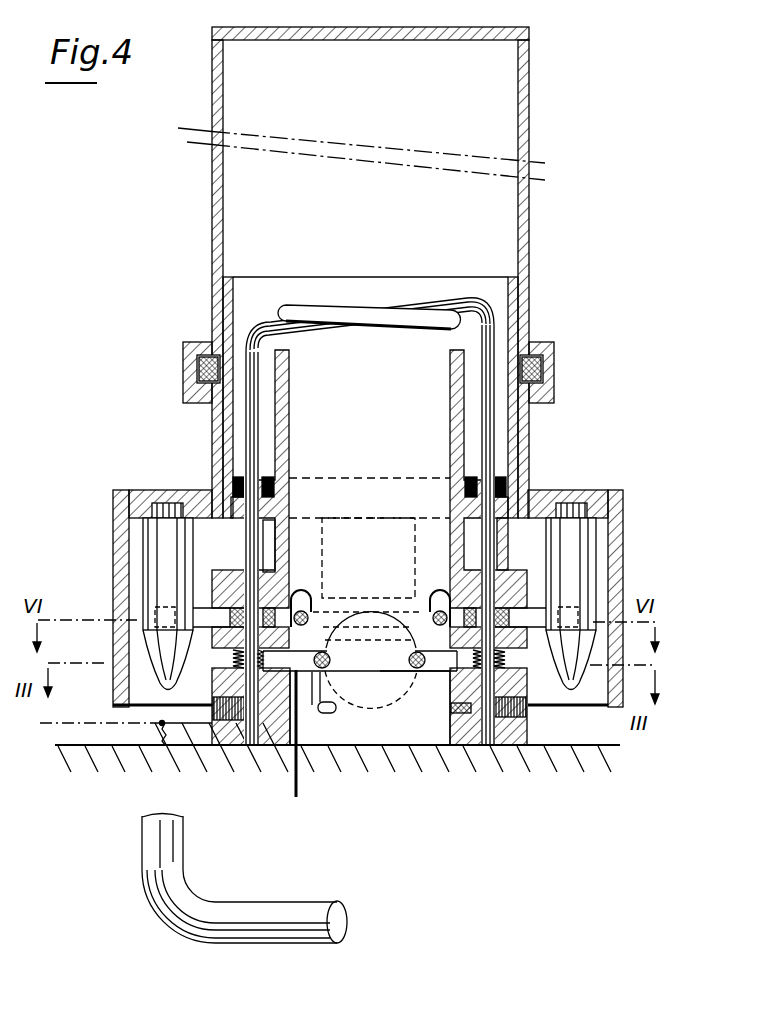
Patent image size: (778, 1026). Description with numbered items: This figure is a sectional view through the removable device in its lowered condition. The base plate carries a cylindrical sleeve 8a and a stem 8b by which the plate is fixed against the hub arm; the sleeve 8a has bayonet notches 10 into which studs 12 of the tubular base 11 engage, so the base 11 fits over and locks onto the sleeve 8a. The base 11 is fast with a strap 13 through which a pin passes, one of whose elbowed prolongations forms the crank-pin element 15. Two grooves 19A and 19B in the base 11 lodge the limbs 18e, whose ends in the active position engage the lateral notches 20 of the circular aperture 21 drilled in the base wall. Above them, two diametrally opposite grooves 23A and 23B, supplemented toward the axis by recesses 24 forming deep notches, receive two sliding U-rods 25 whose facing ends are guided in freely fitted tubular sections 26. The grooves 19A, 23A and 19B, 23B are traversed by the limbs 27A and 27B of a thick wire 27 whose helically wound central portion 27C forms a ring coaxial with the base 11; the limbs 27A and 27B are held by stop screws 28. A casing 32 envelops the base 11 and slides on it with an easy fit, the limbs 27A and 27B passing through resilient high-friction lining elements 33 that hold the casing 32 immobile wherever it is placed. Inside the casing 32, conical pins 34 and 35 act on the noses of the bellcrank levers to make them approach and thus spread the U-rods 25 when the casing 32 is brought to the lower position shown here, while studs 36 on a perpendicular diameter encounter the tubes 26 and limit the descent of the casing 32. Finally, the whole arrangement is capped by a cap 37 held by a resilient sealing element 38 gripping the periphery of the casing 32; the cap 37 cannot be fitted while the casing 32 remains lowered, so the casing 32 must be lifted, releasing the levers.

The cap 37 is at (212, 106).
The wire 27 is at (334, 296).
The limb of the wire 27A is at (490, 352).
The limb of the wire 27B is at (255, 377).
The central portion of the wire 27C is at (370, 312).
The resilient sealing element 38 is at (197, 370).
The lining elements 33 is at (236, 482).
The conical pin 34 is at (163, 540).
The conical pin 35 is at (565, 535).
The studs 36 is at (340, 518).
The casing 32 is at (604, 503).
The groove 23A is at (527, 613).
The groove 23B is at (220, 617).
The recesses 24 is at (300, 588).
The tubular sections 26 is at (333, 593).
The circular aperture 21 is at (377, 607).
The tubular base 11 is at (511, 587).
The U-rods 25 is at (427, 617).
The limbs 18e is at (345, 673).
The groove 19A is at (508, 660).
The groove 19B is at (240, 658).
The bayonet notches 10 is at (447, 680).
The studs 12 is at (323, 712).
The lateral notches 20 is at (393, 677).
The cylindrical sleeve 8a is at (450, 747).
The stem 8b is at (232, 737).
The stop screws 28 is at (240, 722).
The strap 13 is at (127, 730).
The crank-pin element 15 is at (250, 920).